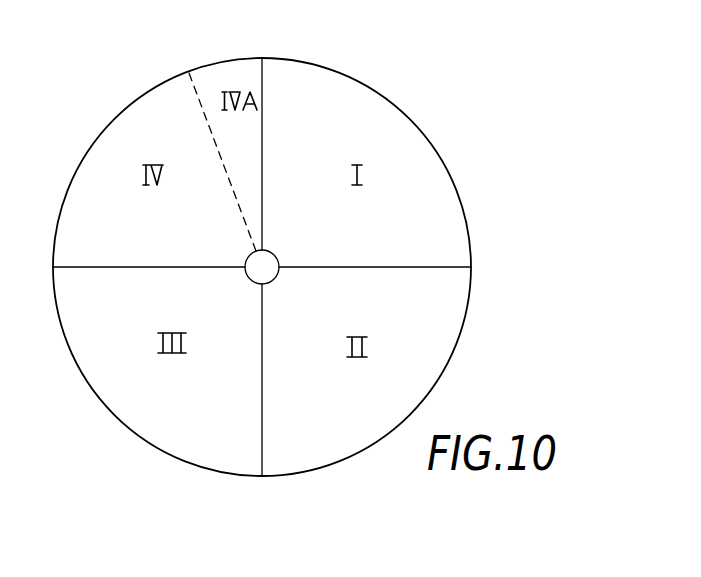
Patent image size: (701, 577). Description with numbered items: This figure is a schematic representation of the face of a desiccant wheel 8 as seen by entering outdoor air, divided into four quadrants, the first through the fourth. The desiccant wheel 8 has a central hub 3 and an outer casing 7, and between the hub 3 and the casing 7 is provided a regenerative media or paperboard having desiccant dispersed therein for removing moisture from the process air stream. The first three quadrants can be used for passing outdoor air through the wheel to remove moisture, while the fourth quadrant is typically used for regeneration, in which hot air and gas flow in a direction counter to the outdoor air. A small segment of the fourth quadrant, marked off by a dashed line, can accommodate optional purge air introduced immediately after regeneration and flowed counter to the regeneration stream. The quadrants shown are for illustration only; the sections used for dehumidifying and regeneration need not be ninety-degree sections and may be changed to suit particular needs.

The desiccant wheel 8 is at (425, 168).
The casing 7 is at (330, 447).
The central hub 3 is at (264, 269).